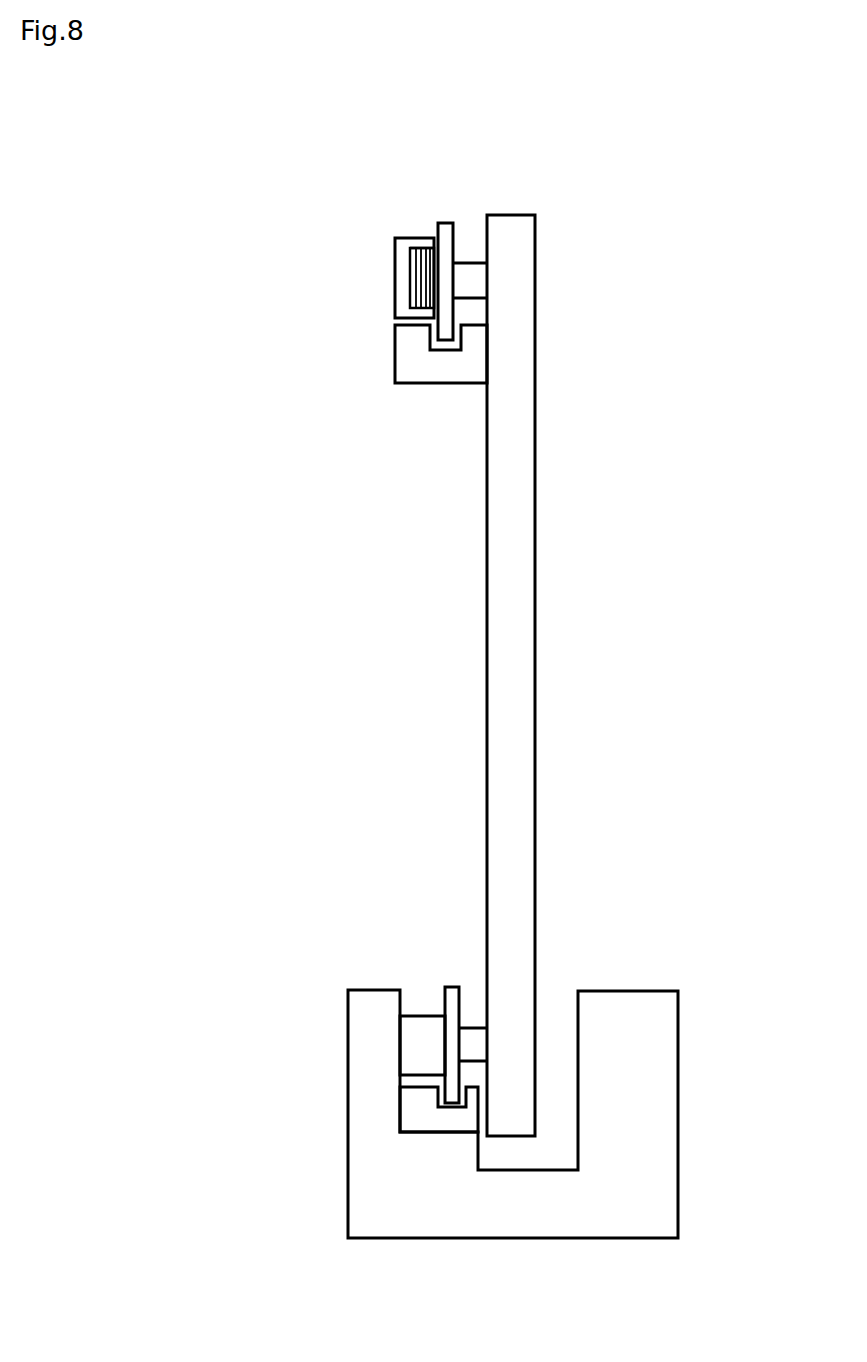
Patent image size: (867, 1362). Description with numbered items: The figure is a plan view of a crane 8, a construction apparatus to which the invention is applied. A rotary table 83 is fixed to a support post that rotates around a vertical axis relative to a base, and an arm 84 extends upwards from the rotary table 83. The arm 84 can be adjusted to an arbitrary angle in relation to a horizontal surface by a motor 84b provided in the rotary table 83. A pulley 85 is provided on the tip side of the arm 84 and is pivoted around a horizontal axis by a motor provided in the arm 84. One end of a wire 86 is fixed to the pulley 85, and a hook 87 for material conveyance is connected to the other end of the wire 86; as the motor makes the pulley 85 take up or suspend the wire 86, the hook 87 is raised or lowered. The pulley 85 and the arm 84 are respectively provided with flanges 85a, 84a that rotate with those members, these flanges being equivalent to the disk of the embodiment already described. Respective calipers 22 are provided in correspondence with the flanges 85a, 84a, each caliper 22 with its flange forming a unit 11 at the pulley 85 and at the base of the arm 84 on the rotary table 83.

The crane 8 is at (306, 726).
The sensor unit 11 is at (373, 637).
The caliper 22 is at (433, 375).
The rotary table 83 is at (678, 1100).
The arm 84 is at (536, 622).
The flange 84a is at (453, 987).
The motor 84b is at (422, 1022).
The pulley 85 is at (430, 242).
The flange 85a is at (455, 234).
The wire 86 is at (411, 262).
The hook 87 is at (395, 299).